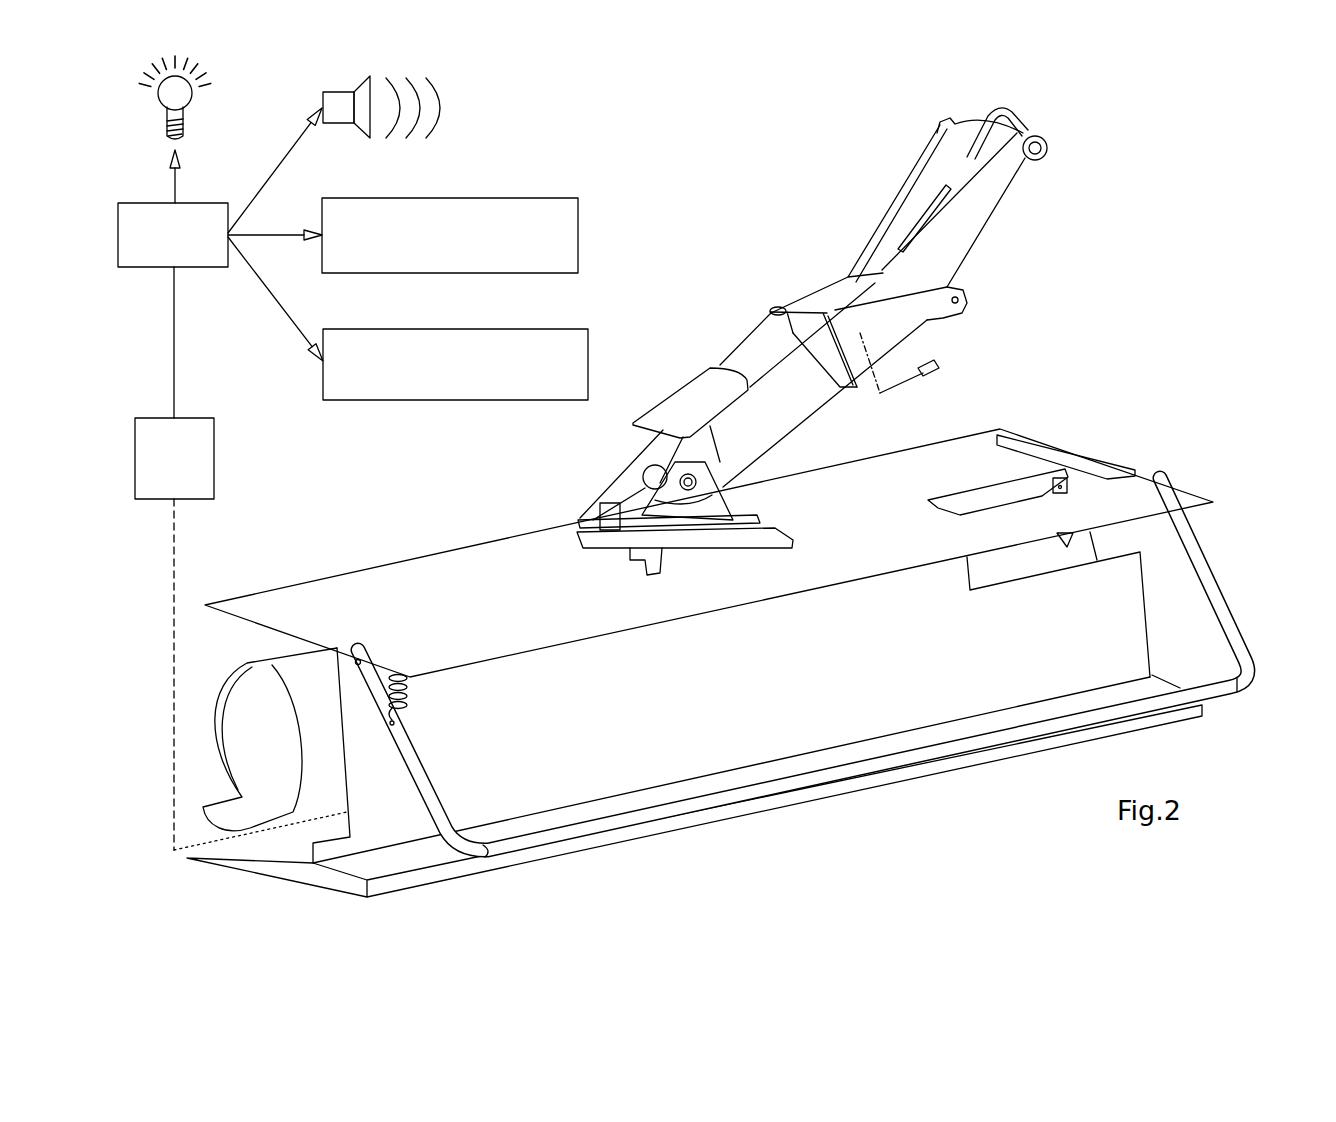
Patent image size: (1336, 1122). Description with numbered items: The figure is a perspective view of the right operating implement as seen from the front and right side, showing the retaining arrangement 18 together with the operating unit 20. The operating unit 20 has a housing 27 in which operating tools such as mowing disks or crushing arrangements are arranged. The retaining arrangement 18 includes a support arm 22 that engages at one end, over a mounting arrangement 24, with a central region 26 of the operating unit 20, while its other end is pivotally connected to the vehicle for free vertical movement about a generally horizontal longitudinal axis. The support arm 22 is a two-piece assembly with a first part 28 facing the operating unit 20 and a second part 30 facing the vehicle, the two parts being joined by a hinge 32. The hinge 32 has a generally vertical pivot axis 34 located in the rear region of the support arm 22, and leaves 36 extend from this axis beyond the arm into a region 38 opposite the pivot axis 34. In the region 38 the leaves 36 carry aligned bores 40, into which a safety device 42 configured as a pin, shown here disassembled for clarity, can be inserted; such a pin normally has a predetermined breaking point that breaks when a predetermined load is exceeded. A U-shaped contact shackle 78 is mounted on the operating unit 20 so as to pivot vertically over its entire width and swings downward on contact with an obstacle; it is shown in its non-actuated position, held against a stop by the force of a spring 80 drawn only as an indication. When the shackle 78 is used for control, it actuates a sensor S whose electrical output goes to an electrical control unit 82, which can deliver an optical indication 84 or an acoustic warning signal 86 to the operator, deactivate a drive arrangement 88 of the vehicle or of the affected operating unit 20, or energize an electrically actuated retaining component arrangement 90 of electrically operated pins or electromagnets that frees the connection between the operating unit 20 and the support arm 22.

The retaining arrangement 18 is at (865, 314).
The operating unit 20 is at (800, 836).
The support arm 22 is at (1048, 283).
The mounting arrangement 24 is at (560, 464).
The central region 26 is at (779, 586).
The housing 27 is at (496, 615).
The first part 28 is at (650, 367).
The second part 30 is at (879, 169).
The hinge 32 is at (749, 304).
The pivot axis 34 is at (777, 308).
The leaves 36 is at (810, 293).
The region 38 is at (872, 397).
The bores 40 is at (833, 352).
The safety device 42 is at (940, 366).
The contact shackle 78 is at (1223, 607).
The spring 80 is at (400, 712).
The electrical control unit 82 is at (205, 268).
The optical indication 84 is at (188, 118).
The acoustic warning signal 86 is at (368, 77).
The drive arrangement 88 is at (517, 198).
The electrically actuated retaining component arrangement 90 is at (497, 329).